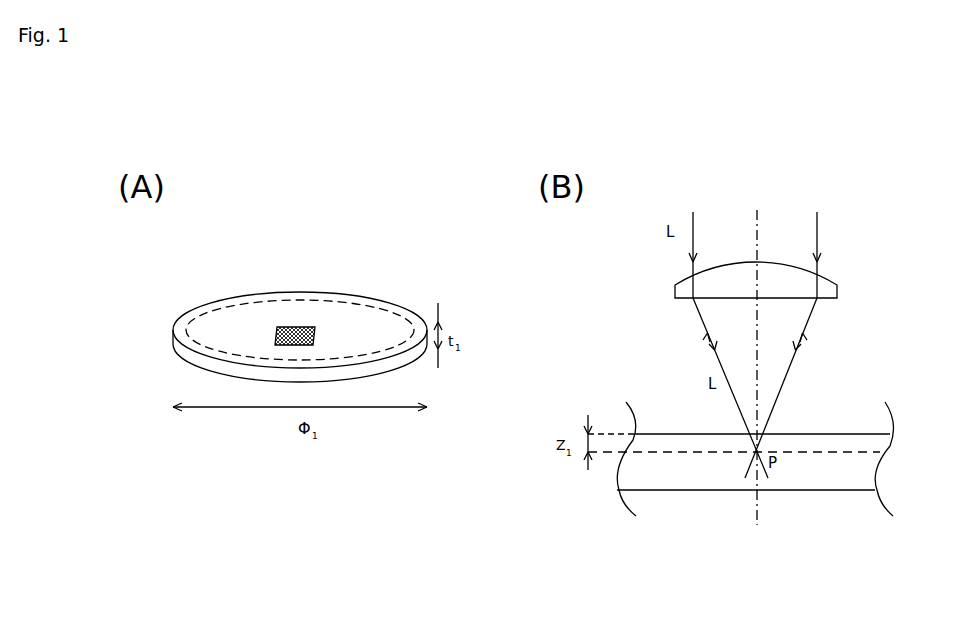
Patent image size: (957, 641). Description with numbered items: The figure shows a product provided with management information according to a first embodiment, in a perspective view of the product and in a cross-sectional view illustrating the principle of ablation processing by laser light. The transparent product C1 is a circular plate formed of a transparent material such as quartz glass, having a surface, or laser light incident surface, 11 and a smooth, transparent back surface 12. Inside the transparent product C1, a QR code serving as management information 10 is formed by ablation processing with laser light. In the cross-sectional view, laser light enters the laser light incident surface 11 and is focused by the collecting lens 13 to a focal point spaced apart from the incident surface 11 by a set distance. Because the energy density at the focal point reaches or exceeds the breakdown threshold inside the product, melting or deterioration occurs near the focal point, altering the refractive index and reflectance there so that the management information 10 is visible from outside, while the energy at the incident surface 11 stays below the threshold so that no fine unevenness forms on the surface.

The management information 10 is at (300, 327).
The surface (laser light incident surface) 11 is at (215, 300).
The back surface 12 is at (195, 374).
The collecting lens 13 is at (838, 290).
The transparent product C1 is at (263, 268).